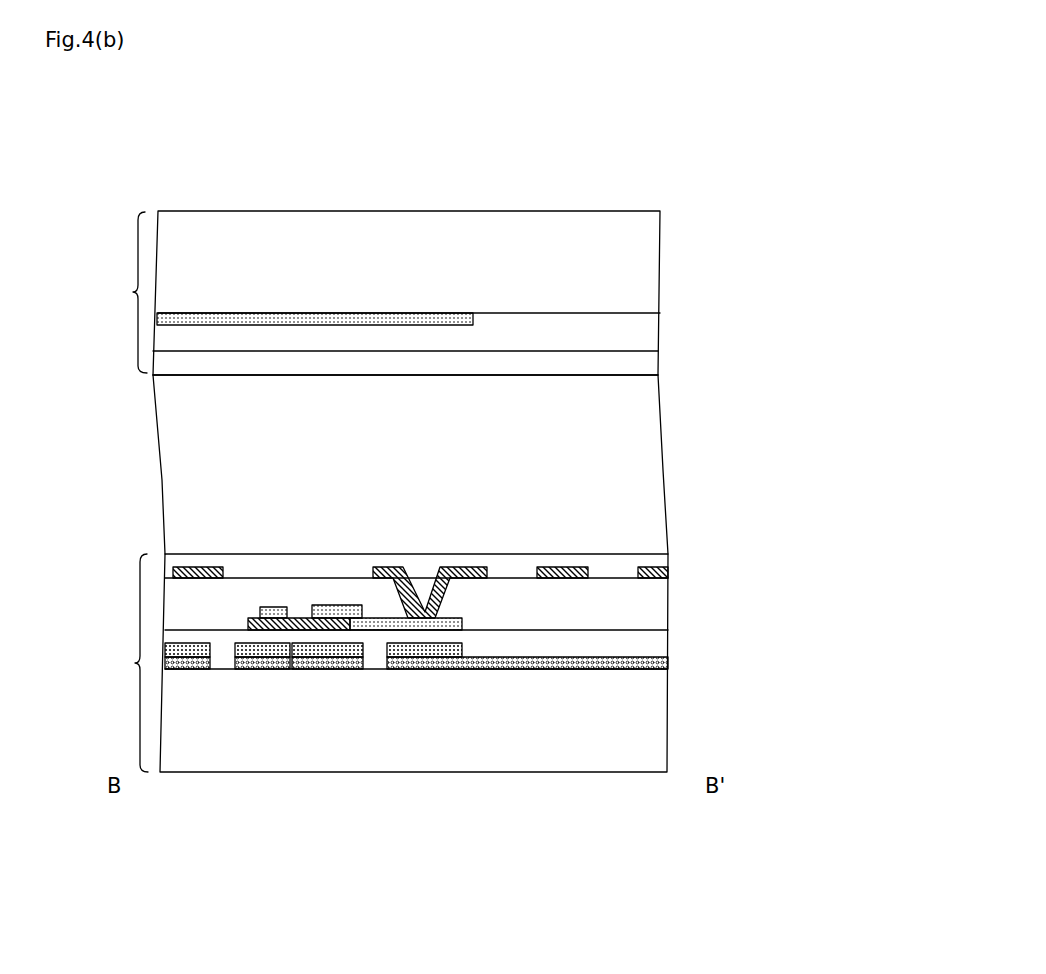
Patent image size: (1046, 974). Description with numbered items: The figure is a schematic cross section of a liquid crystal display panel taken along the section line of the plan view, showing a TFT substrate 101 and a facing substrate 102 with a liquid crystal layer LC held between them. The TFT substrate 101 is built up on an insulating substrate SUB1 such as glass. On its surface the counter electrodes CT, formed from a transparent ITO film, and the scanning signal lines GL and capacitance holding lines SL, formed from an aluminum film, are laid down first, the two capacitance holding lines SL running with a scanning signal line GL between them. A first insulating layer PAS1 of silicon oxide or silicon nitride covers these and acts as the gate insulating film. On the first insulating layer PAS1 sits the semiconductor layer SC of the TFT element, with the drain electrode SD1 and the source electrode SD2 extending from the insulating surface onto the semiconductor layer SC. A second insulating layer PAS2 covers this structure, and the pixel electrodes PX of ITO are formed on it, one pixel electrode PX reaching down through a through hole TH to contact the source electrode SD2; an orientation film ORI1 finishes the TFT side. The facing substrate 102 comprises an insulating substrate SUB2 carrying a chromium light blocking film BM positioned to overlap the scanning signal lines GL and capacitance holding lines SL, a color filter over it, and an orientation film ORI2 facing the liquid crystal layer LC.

The facing substrate 102 is at (116, 292).
The TFT substrate 101 is at (117, 663).
The insulating substrate SUB2 is at (422, 265).
The insulating substrate SUB1 is at (611, 732).
The light blocking film BM is at (270, 318).
The orientation film ORI2 is at (613, 363).
The orientation film ORI1 is at (338, 568).
The liquid crystal layer LC is at (223, 430).
The pixel electrode PX is at (187, 567).
The second insulating layer PAS2 is at (242, 597).
The first insulating layer PAS1 is at (613, 643).
The drain electrode SD1 is at (273, 607).
The source electrode SD2 is at (375, 630).
The semiconductor layer SC is at (292, 630).
The through hole TH is at (452, 600).
The scanning signal line GL is at (265, 657).
The counter electrode CT is at (535, 663).
The capacitance holding line SL is at (187, 669).